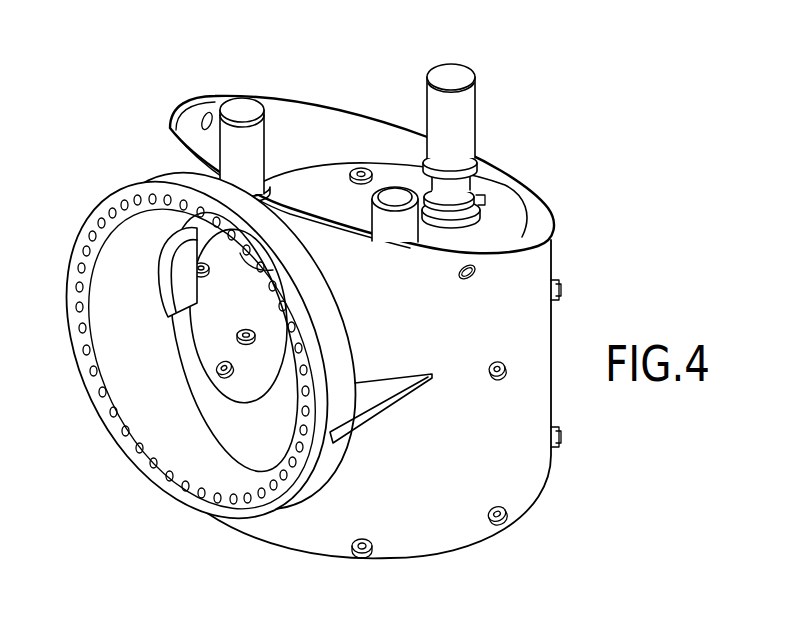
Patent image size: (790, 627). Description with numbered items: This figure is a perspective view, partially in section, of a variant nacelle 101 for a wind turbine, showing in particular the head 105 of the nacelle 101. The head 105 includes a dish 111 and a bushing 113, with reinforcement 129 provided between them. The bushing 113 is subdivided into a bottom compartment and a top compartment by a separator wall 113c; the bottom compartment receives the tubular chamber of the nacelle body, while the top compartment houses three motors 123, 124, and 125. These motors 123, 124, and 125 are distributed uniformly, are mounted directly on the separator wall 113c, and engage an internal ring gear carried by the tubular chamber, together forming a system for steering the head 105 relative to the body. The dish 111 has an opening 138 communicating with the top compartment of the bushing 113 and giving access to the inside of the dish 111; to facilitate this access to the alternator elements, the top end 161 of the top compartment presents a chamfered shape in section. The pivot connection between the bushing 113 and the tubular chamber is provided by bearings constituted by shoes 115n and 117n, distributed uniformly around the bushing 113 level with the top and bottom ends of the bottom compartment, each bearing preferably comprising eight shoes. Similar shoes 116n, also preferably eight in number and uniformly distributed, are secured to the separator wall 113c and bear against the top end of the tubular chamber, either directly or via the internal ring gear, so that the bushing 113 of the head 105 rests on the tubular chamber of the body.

The nacelle 101 is at (562, 173).
The head 105 is at (565, 317).
The dish 111 is at (112, 420).
The bushing 113 is at (537, 400).
The separator wall 113c is at (552, 222).
The shoes 115n is at (497, 380).
The shoes 116n is at (362, 165).
The shoes 117n is at (361, 540).
The motor 123 is at (246, 102).
The motor 124 is at (372, 225).
The motor 125 is at (452, 70).
The reinforcement 129 is at (383, 390).
The opening 138 is at (173, 303).
The top end 161 is at (497, 167).